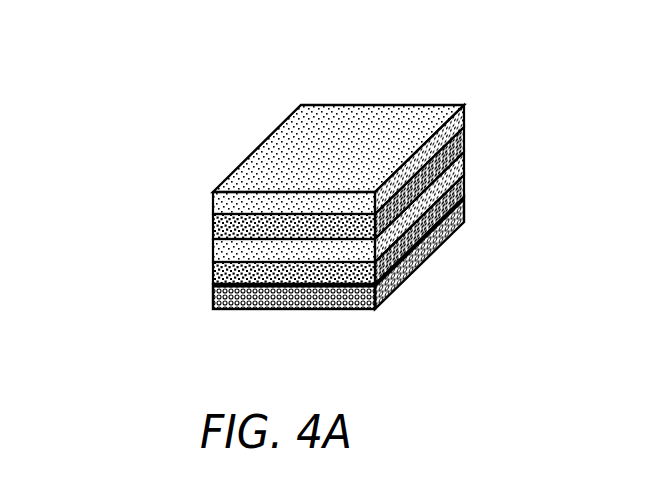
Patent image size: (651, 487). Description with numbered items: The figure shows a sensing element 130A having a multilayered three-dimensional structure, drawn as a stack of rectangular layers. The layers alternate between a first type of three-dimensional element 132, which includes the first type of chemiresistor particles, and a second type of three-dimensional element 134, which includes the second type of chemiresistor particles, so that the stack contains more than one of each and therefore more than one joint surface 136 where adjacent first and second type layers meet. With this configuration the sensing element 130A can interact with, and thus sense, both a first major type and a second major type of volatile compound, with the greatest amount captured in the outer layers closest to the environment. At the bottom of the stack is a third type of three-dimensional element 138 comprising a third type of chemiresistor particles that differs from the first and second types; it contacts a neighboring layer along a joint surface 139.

The sensing element 130A is at (196, 85).
The first type 3D element 132 is at (392, 123).
The joint surface 136 is at (464, 128).
The second type 3D element 134 is at (464, 160).
The joint surface 139 is at (417, 260).
The third type 3D element 138 is at (387, 298).